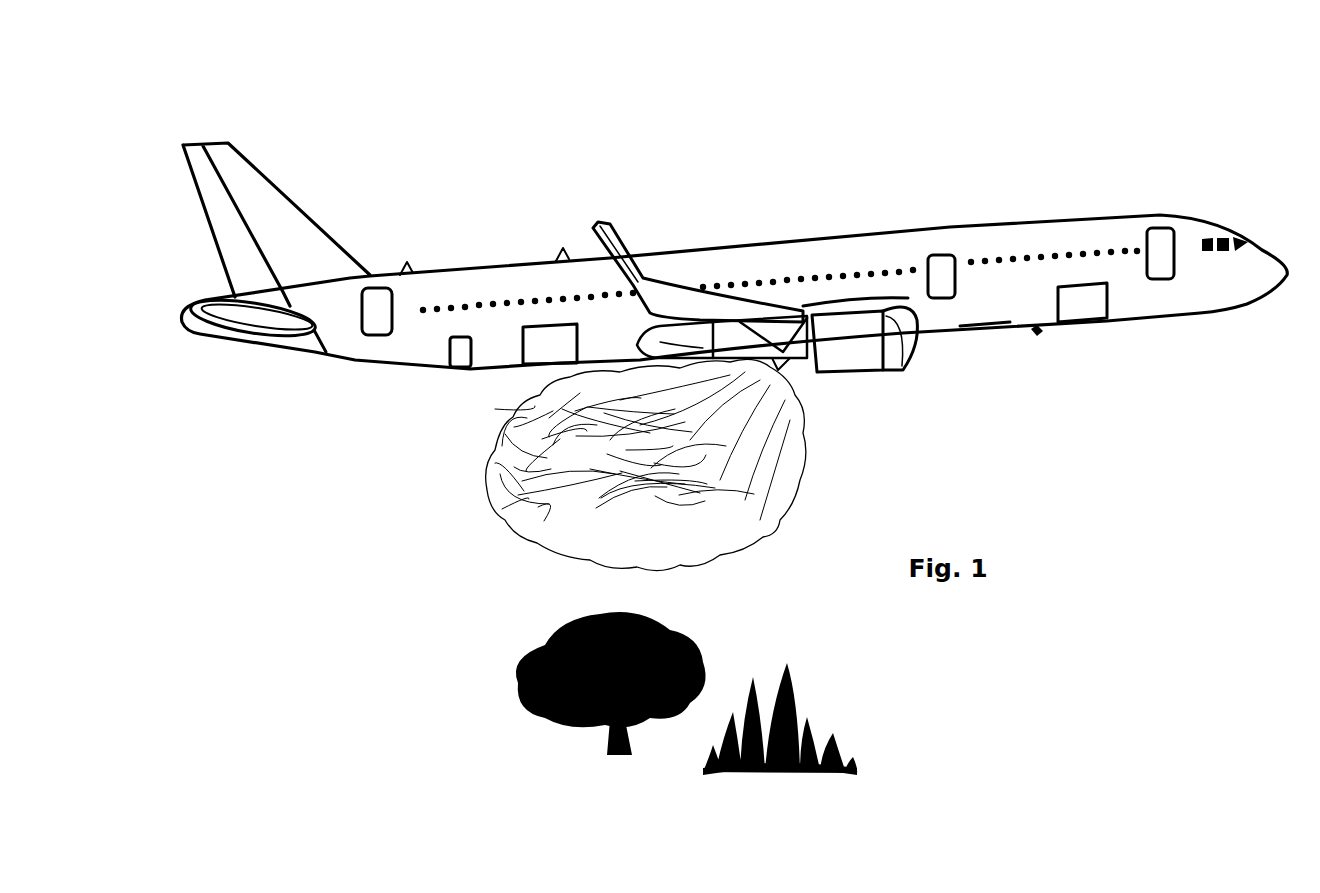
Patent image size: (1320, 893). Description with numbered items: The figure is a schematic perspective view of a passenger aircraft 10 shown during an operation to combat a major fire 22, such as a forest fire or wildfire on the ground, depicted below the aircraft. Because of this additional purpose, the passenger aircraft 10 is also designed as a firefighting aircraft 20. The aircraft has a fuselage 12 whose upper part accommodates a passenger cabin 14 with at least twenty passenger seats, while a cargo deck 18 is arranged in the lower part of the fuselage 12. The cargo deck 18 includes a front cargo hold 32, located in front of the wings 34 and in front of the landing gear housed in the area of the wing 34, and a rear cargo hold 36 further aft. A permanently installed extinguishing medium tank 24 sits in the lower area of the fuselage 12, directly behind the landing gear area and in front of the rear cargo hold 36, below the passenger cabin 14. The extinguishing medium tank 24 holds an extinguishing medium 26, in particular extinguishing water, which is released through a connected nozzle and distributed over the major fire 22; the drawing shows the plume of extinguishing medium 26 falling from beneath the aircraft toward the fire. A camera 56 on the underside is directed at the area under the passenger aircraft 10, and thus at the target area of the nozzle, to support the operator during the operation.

The passenger aircraft 10 is at (734, 269).
The fuselage 12 is at (764, 237).
The passenger cabin 14 is at (540, 290).
The cargo deck 18 is at (987, 327).
The firefighting aircraft 20 is at (874, 268).
The major fire 22 is at (887, 710).
The extinguishing medium tank 24 is at (780, 372).
The extinguishing medium 26 is at (633, 497).
The front cargo hold 32 is at (1083, 300).
The wing 34 is at (687, 277).
The rear cargo hold 36 is at (553, 345).
The camera 56 is at (1037, 332).